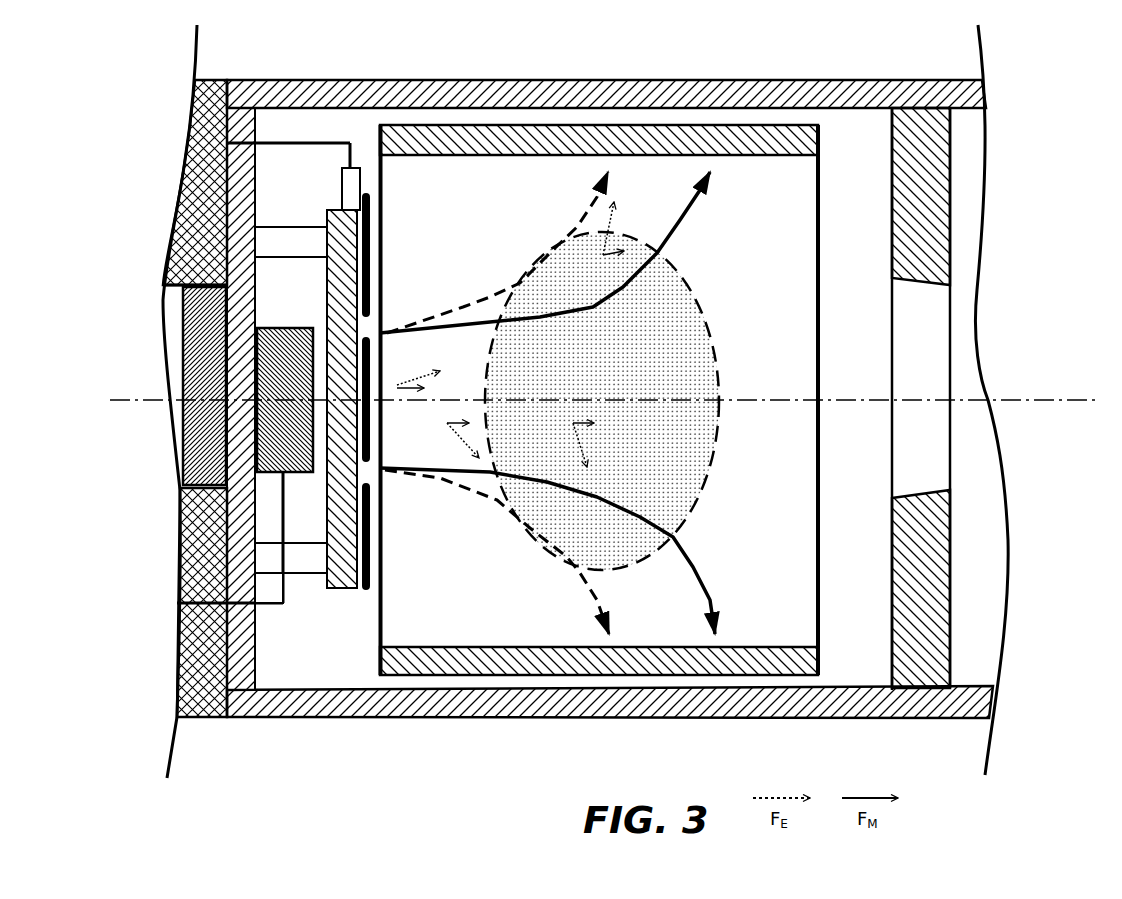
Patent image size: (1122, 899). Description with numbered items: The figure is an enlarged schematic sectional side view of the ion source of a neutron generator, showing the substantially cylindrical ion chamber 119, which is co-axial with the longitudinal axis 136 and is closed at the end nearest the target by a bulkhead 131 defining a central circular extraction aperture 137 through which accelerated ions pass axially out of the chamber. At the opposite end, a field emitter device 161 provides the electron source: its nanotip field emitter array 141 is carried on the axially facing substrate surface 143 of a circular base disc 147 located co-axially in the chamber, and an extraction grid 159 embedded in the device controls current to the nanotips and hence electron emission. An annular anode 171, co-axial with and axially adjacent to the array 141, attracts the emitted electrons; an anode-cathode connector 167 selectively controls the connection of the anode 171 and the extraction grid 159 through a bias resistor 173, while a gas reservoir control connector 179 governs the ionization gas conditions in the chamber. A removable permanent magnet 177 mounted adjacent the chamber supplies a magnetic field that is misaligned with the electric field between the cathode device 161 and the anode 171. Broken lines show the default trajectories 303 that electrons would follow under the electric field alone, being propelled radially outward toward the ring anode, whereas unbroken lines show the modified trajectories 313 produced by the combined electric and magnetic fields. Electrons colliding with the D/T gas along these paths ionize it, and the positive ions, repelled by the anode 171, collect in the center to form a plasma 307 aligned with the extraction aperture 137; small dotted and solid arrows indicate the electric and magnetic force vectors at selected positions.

The ion chamber 119 is at (760, 302).
The bulkhead 131 is at (932, 243).
The longitudinal axis 136 is at (138, 372).
The extraction aperture 137 is at (943, 507).
The field emitter array 141 is at (403, 472).
The substrate surface 143 is at (343, 334).
The base disc 147 is at (340, 575).
The extraction grid 159 is at (362, 263).
The field emitter device 161 is at (367, 608).
The anode-cathode connector 167 is at (318, 141).
The annular anode 171 is at (771, 148).
The bias resistor 173 is at (353, 202).
The permanent magnet 177 is at (184, 337).
The gas reservoir control connector 179 is at (265, 606).
The default trajectories 303 is at (483, 302).
The plasma 307 is at (613, 386).
The modified trajectories 313 is at (698, 580).